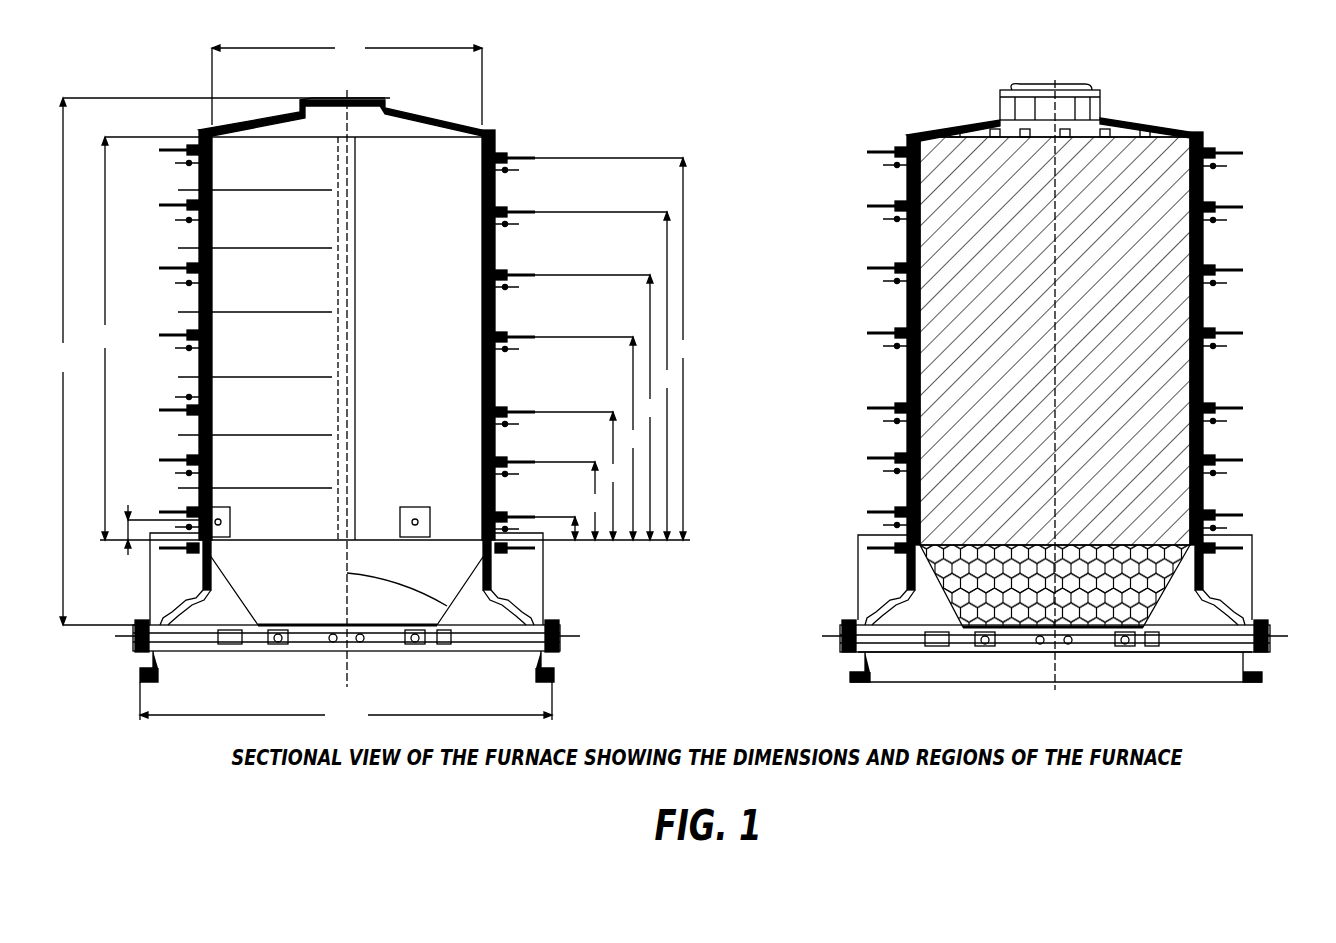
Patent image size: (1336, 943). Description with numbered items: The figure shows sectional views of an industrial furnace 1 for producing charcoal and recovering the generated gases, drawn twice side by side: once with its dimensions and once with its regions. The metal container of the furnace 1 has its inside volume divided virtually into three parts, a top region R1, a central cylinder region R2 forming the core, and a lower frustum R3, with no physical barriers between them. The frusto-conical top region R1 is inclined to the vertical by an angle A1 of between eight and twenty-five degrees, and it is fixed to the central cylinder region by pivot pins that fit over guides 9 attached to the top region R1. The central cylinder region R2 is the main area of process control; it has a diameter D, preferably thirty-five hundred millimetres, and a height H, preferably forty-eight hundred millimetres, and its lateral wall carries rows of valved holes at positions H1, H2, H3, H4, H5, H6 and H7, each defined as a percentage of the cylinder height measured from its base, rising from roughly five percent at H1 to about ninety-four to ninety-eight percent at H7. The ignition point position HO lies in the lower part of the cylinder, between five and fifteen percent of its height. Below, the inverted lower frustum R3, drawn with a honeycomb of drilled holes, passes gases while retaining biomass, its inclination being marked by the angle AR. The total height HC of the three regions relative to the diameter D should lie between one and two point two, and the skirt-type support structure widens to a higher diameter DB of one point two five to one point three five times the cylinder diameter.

The industrial furnace 1 is at (1056, 385).
The guides 9 is at (885, 350).
The top region R1 is at (1105, 116).
The central cylinder region R2 is at (1060, 317).
The lower frustum R3 is at (1130, 570).
The diameter of the central cylinder D is at (347, 80).
The total height of the volume HC is at (217, 361).
The height of the central cylinder H is at (393, 338).
The ignition point position HO is at (157, 517).
The first hole position H1 is at (536, 529).
The second hole position H2 is at (551, 501).
The third hole position H3 is at (562, 476).
The fourth hole position H4 is at (571, 438).
The fifth hole position H5 is at (581, 407).
The sixth hole position H6 is at (588, 376).
The seventh hole position H7 is at (598, 349).
The frustoconical inclination angle A1 is at (272, 100).
The hopper angle AR is at (397, 582).
The higher diameter of the support structure DB is at (346, 704).